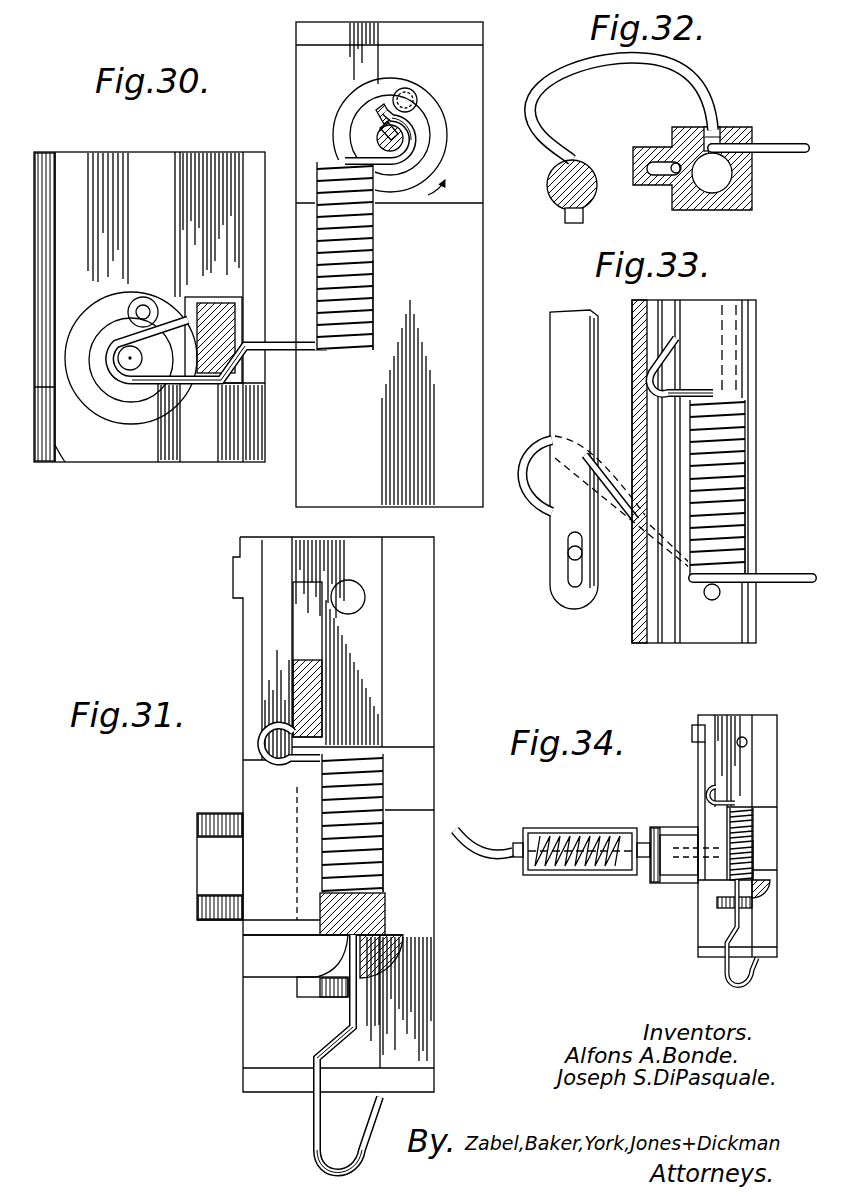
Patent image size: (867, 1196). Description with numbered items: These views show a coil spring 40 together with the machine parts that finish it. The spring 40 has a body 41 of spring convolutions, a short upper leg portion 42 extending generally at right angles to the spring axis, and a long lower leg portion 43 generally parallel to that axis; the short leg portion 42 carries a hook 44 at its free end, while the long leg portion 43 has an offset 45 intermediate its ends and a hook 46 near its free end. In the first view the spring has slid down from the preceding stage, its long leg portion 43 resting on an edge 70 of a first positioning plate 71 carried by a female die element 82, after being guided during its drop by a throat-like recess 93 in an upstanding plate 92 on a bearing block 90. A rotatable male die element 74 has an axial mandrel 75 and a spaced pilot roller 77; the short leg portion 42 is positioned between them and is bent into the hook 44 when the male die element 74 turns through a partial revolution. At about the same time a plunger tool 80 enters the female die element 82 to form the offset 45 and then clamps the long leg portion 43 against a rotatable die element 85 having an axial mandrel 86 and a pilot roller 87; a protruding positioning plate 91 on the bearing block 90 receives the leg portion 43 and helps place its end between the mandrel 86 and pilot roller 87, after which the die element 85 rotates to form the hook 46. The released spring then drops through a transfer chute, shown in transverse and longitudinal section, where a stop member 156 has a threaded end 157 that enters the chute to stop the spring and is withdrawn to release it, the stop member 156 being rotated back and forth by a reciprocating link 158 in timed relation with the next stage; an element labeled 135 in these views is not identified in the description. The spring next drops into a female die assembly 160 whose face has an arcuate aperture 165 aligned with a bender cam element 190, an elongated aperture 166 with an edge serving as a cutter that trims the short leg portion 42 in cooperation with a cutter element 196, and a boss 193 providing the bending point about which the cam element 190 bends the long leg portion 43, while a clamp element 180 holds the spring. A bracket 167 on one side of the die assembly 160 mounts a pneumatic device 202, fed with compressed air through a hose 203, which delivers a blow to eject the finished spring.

In FIG. 30, the spring 40 is at (382, 258).
In FIG. 31, the spring 40 is at (390, 783).
In FIG. 33, the spring 40 is at (752, 443).
In FIG. 34, the spring 40 is at (760, 817).
In FIG. 30, the body of spring convolutions 41 is at (370, 287).
In FIG. 31, the body of spring convolutions 41 is at (382, 835).
In FIG. 32, the body of spring convolutions 41 is at (712, 200).
In FIG. 33, the body of spring convolutions 41 is at (745, 480).
In FIG. 34, the body of spring convolutions 41 is at (752, 848).
In FIG. 30, the short leg portion 42 is at (424, 155).
In FIG. 31, the short leg portion 42 is at (308, 768).
In FIG. 32, the short leg portion 42 is at (655, 156).
In FIG. 33, the short leg portion 42 is at (660, 347).
In FIG. 34, the short leg portion 42 is at (698, 797).
In FIG. 30, the long leg portion 43 is at (279, 327).
In FIG. 31, the long leg portion 43 is at (341, 1015).
In FIG. 32, the long leg portion 43 is at (778, 158).
In FIG. 33, the long leg portion 43 is at (770, 587).
In FIG. 34, the long leg portion 43 is at (720, 967).
In FIG. 30, the hook 44 is at (418, 128).
In FIG. 31, the hook 44 is at (271, 739).
In FIG. 33, the hook 44 is at (660, 389).
In FIG. 30, the offset 45 is at (233, 380).
In FIG. 31, the offset 45 is at (335, 1050).
In FIG. 30, the hook 46 is at (103, 372).
In FIG. 31, the hook 46 is at (327, 1173).
In FIG. 30, the edge 70 is at (247, 358).
In FIG. 30, the first positioning plate 71 is at (262, 422).
In FIG. 30, the male die element 74 is at (353, 86).
In FIG. 30, the mandrel 75 is at (378, 135).
In FIG. 30, the pilot roller 77 is at (409, 89).
In FIG. 30, the plunger tool 80 is at (208, 303).
In FIG. 30, the female die element 82 is at (215, 213).
In FIG. 30, the rotatable die element 85 is at (95, 320).
In FIG. 30, the mandrel 86 is at (141, 350).
In FIG. 30, the pilot roller 87 is at (141, 297).
In FIG. 30, the bearing block 90 is at (118, 215).
In FIG. 30, the positioning plate 91 is at (182, 420).
In FIG. 30, the upstanding plate 92 is at (59, 456).
In FIG. 30, the throat-like recess 93 is at (43, 378).
In FIG. 32, the housing 135 is at (752, 197).
In FIG. 33, the housing 135 is at (756, 350).
In FIG. 32, the stop member 156 is at (545, 80).
In FIG. 33, the stop member 156 is at (533, 447).
In FIG. 32, the threaded end 157 is at (716, 127).
In FIG. 33, the threaded end 157 is at (718, 597).
In FIG. 32, the link 158 is at (548, 192).
In FIG. 33, the link 158 is at (525, 385).
In FIG. 31, the female die assembly 160 is at (236, 622).
In FIG. 31, the arcuate aperture 165 is at (393, 930).
In FIG. 34, the arcuate aperture 165 is at (757, 898).
In FIG. 31, the elongated aperture 166 is at (317, 637).
In FIG. 34, the elongated aperture 166 is at (723, 768).
In FIG. 31, the bracket 167 is at (200, 813).
In FIG. 34, the bracket 167 is at (680, 867).
In FIG. 31, the clamp element 180 is at (385, 897).
In FIG. 31, the bender cam element 190 is at (397, 967).
In FIG. 34, the bender cam element 190 is at (761, 889).
In FIG. 31, the boss 193 is at (292, 965).
In FIG. 34, the boss 193 is at (703, 888).
In FIG. 31, the cutter element 196 is at (322, 687).
In FIG. 34, the pneumatic device 202 is at (583, 827).
In FIG. 34, the hose 203 is at (485, 800).